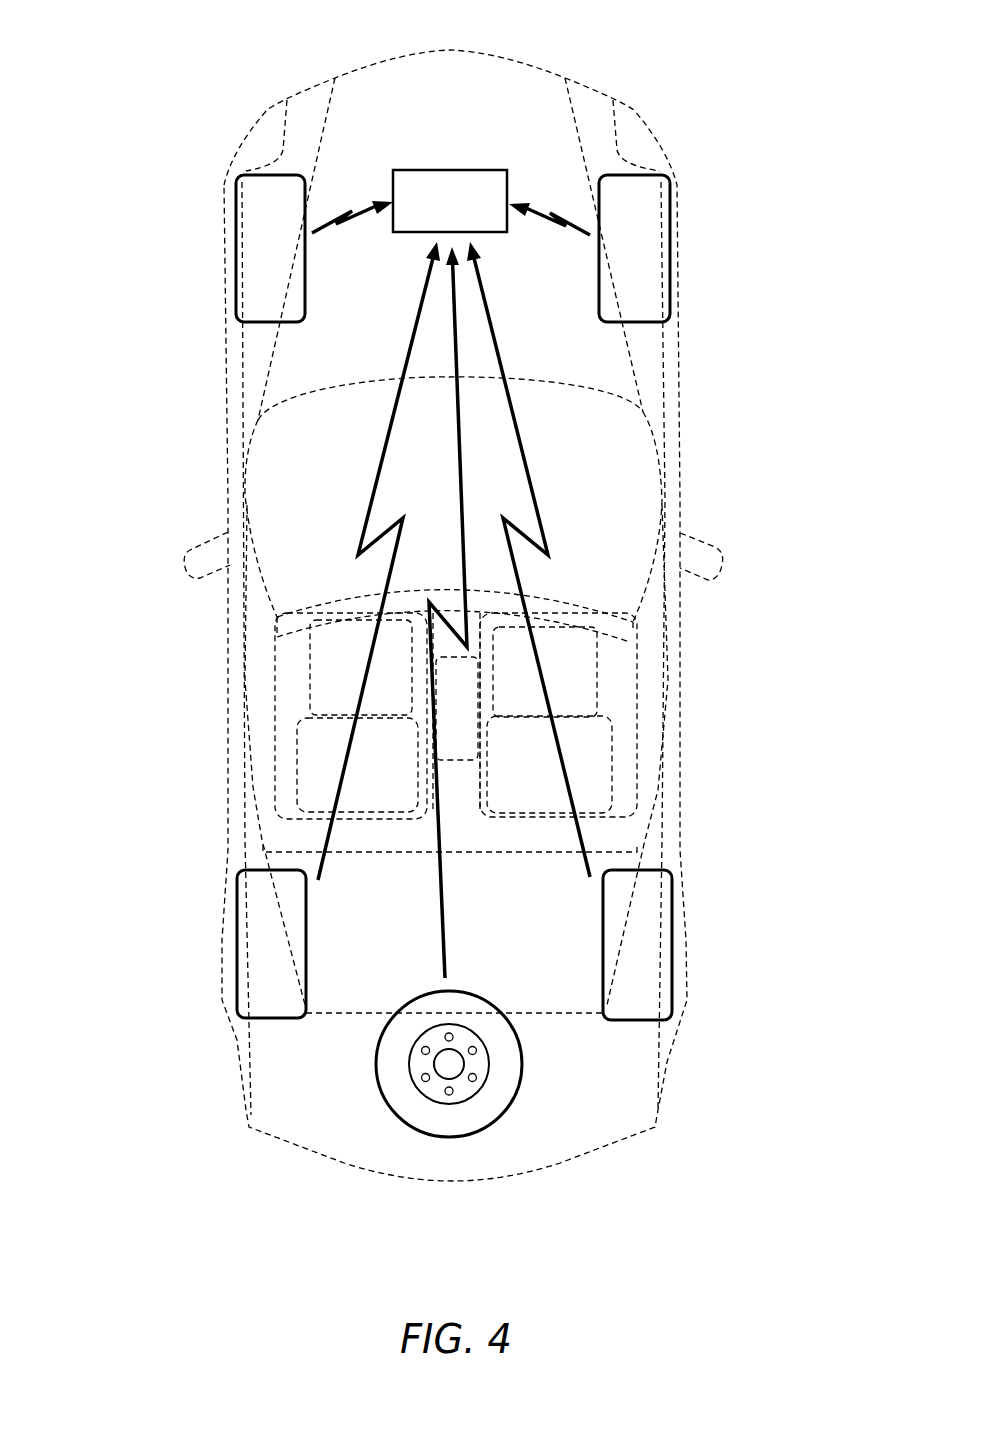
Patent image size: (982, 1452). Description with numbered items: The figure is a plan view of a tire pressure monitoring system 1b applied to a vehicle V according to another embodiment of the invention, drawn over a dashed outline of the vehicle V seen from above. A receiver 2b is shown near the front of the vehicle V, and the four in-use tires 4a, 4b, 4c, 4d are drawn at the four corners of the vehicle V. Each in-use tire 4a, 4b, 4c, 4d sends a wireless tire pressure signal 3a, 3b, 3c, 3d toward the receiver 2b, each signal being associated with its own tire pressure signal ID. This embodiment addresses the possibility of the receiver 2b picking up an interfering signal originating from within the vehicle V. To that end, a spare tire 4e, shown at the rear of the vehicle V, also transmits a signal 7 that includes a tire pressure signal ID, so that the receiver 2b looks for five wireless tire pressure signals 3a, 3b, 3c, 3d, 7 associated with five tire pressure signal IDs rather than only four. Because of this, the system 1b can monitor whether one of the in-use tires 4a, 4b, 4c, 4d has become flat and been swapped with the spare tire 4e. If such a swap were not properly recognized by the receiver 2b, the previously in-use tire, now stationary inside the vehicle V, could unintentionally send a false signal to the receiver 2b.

The system 1b is at (484, 128).
The receiver 2b is at (427, 202).
The wireless tire pressure signal 3a is at (355, 204).
The wireless tire pressure signal 3b is at (545, 204).
The wireless tire pressure signal 3c is at (540, 677).
The wireless tire pressure signal 3d is at (364, 677).
The in-use tire 4a is at (237, 261).
The in-use tire 4b is at (671, 267).
The in-use tire 4c is at (673, 945).
The in-use tire 4d is at (238, 942).
The spare tire 4e is at (517, 1105).
The signal 7 is at (443, 919).
The vehicle V is at (226, 447).